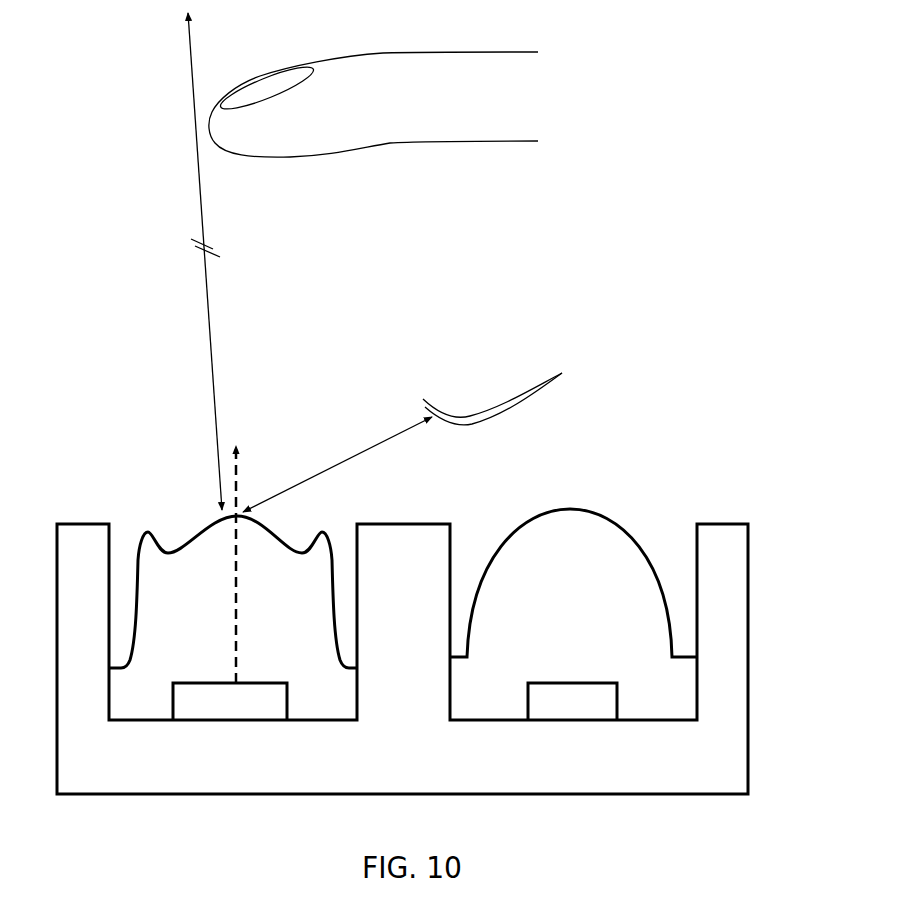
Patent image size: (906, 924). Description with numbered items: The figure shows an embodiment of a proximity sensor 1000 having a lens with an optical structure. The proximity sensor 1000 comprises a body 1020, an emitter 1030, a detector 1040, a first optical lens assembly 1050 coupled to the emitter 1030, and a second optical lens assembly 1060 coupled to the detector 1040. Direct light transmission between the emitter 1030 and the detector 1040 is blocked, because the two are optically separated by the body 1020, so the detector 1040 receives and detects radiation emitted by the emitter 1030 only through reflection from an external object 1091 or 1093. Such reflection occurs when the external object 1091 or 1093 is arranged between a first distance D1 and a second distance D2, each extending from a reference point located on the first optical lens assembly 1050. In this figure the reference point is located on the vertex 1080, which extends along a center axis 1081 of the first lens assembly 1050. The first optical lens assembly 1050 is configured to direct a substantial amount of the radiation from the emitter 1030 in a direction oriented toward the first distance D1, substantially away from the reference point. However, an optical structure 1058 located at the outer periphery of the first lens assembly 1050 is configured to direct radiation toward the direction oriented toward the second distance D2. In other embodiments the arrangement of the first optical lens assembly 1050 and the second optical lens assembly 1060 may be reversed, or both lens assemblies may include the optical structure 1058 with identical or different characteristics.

The proximity sensor 1000 is at (138, 430).
The body 1020 is at (438, 763).
The emitter 1030 is at (261, 713).
The detector 1040 is at (595, 705).
The first optical lens assembly 1050 is at (212, 592).
The optical structure 1058 is at (143, 538).
The second optical lens assembly 1060 is at (585, 575).
The vertex 1080 is at (243, 519).
The center axis 1081 is at (238, 637).
The external object 1091 is at (341, 126).
The external object 1093 is at (452, 410).
The first distance D1 is at (210, 311).
The second distance D2 is at (305, 479).